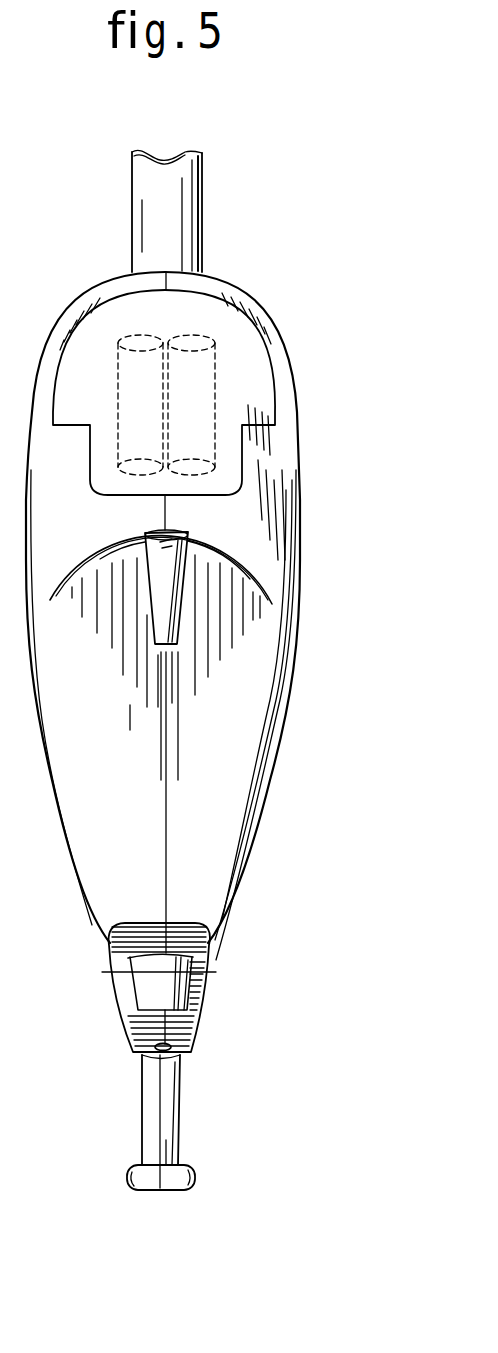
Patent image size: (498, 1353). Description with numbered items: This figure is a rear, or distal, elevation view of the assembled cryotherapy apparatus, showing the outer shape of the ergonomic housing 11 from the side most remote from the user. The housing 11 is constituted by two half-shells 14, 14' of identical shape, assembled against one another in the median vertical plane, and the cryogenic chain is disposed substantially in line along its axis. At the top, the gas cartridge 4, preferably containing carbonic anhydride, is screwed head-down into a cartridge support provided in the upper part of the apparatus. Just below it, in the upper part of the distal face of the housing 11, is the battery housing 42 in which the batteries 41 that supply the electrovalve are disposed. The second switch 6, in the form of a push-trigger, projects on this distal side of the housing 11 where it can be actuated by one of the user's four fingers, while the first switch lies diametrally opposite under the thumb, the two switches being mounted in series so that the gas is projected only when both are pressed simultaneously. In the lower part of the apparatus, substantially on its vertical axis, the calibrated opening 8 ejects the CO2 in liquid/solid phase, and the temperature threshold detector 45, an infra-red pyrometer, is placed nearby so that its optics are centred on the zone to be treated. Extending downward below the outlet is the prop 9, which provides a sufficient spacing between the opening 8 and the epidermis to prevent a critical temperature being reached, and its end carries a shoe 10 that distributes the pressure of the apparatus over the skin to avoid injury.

The cartridge 4 is at (183, 215).
The housing 11 is at (272, 316).
The batteries 41 is at (137, 395).
The battery housing 42 is at (192, 405).
The second switch 6 is at (185, 597).
The half-shell 14 is at (205, 724).
The half-shell 14' is at (228, 701).
The calibrated opening 8 is at (162, 988).
The temperature threshold detector 45 is at (186, 1070).
The prop 9 is at (183, 1112).
The shoe 10 is at (195, 1172).